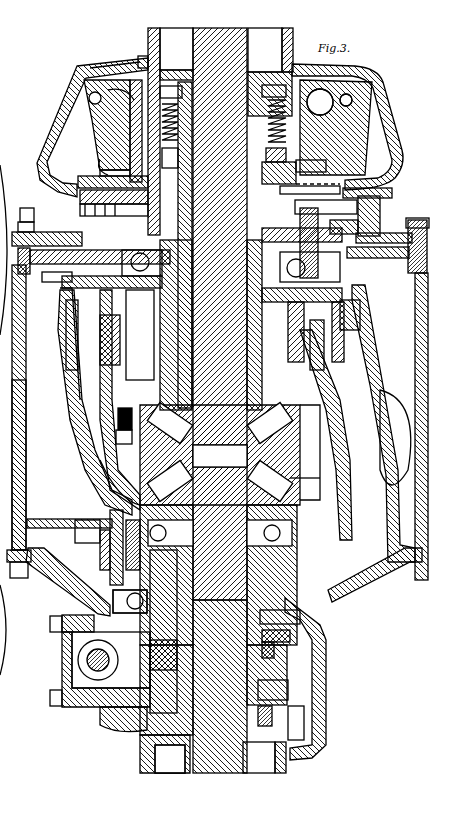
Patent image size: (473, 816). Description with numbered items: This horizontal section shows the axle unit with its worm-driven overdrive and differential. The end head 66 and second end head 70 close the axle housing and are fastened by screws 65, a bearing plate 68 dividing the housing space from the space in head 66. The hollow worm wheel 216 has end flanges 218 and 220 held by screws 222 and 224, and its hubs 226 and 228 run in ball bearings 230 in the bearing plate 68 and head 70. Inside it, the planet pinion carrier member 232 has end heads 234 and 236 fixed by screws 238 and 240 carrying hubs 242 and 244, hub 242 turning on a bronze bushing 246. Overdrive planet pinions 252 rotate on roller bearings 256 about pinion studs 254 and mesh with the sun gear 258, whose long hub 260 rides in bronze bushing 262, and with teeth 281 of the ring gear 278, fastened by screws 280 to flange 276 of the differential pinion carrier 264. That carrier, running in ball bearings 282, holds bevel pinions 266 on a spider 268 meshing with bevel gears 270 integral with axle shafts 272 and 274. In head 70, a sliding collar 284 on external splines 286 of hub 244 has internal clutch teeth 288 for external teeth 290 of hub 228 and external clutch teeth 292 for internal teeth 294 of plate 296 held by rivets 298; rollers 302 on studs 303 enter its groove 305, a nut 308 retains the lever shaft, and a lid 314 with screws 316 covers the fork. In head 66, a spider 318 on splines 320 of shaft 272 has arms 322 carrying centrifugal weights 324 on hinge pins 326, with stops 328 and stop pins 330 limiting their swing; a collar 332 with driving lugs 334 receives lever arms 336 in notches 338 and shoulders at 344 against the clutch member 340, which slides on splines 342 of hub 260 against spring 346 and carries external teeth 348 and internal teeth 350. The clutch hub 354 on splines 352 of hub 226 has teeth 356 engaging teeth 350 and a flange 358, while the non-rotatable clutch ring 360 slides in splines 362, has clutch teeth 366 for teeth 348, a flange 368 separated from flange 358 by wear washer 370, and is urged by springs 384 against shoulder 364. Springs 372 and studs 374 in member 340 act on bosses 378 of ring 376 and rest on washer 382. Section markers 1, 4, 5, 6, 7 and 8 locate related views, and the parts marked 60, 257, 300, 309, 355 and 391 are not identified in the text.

The axle assembly centerline 1 is at (15, 405).
The section line 4 is at (80, 97).
The section line 5 is at (64, 200).
The section line 6 is at (40, 345).
The section line 7 is at (56, 648).
The section line 8 is at (138, 99).
The wheel 60 is at (7, 718).
The screws 65 is at (34, 570).
The end head 66 is at (32, 202).
The bearing plate 68 is at (428, 256).
The second end head 70 is at (76, 590).
The hollow worm wheel 216 is at (30, 420).
The end supporting flange 218 is at (44, 397).
The end supporting flange 220 is at (76, 528).
The screws 222 is at (54, 270).
The screws 224 is at (84, 548).
The hub 226 is at (211, 325).
The hub 228 is at (248, 560).
The ball bearings 230 is at (137, 431).
The member of planet pinion carrier 232 is at (100, 410).
The end head 234 is at (98, 287).
The end head 236 is at (112, 566).
The screws 238 is at (74, 280).
The screws 240 is at (128, 568).
The hub 242 is at (303, 325).
The hub 244 is at (178, 575).
The bronze bushing 246 is at (140, 335).
The overdrive planet pinions 252 is at (306, 345).
The pinion studs 254 is at (124, 340).
The roller bearings 256 is at (106, 335).
The shaft step 257 is at (250, 345).
The sun gear 258 is at (206, 365).
The long hub 260 is at (216, 250).
The bronze bushing 262 is at (250, 310).
The differential pinion carrier 264 is at (138, 480).
The bevel pinions 266 is at (305, 482).
The spider 268 is at (290, 466).
The bevel gears 270 is at (220, 454).
The axle shaft 272 is at (205, 395).
The axle shaft 274 is at (200, 505).
The flange 276 is at (119, 450).
The ring gear 278 is at (56, 362).
The screws 280 is at (122, 432).
The teeth of ring gear 281 is at (60, 328).
The ball bearings 282 is at (247, 528).
The sliding collar 284 is at (292, 642).
The external splines 286 is at (250, 690).
The internal clutch teeth 288 is at (275, 650).
The external teeth 290 is at (268, 624).
The external clutch teeth 292 is at (280, 692).
The internal teeth 294 is at (264, 757).
The plate 296 is at (305, 724).
The rivets 298 is at (306, 754).
The housing 300 is at (120, 644).
The rollers 302 is at (178, 648).
The studs 303 is at (208, 712).
The groove 305 is at (135, 678).
The nut 308 is at (206, 586).
The pin 309 is at (100, 650).
The lid 314 is at (82, 614).
The screws 316 is at (50, 622).
The spider 318 is at (262, 80).
The external splines 320 is at (264, 44).
The arms 322 is at (107, 125).
The centrifugal weights 324 is at (104, 157).
The hinge pins 326 is at (80, 67).
The stops 328 is at (358, 140).
The stop pins 330 is at (336, 127).
The collar 332 is at (331, 100).
The driving lugs 334 is at (121, 100).
The lever arms 336 is at (118, 64).
The notches 338 is at (140, 58).
The clutch member 340 is at (190, 118).
The external splines 342 is at (250, 95).
The shoulder 344 is at (165, 121).
The spring 346 is at (208, 225).
The external clutch teeth 348 is at (105, 172).
The internal clutch teeth 350 is at (344, 172).
The external splines 352 is at (250, 275).
The clutch hub 354 is at (250, 240).
The shaft portion 355 is at (206, 258).
The external clutch teeth 356 is at (346, 185).
The flange 358 is at (250, 205).
The clutch ring 360 is at (382, 214).
The internal splines 362 is at (360, 228).
The shoulder 364 is at (392, 193).
The internal clutch teeth 366 is at (112, 180).
The flange 368 is at (302, 250).
The bronze wear washer 370 is at (116, 210).
The springs 372 is at (274, 123).
The studs 374 is at (165, 141).
The ring 376 is at (300, 162).
The bosses 378 is at (132, 147).
The washer 382 is at (171, 92).
The springs 384 is at (330, 262).
The shaft portion 391 is at (248, 137).